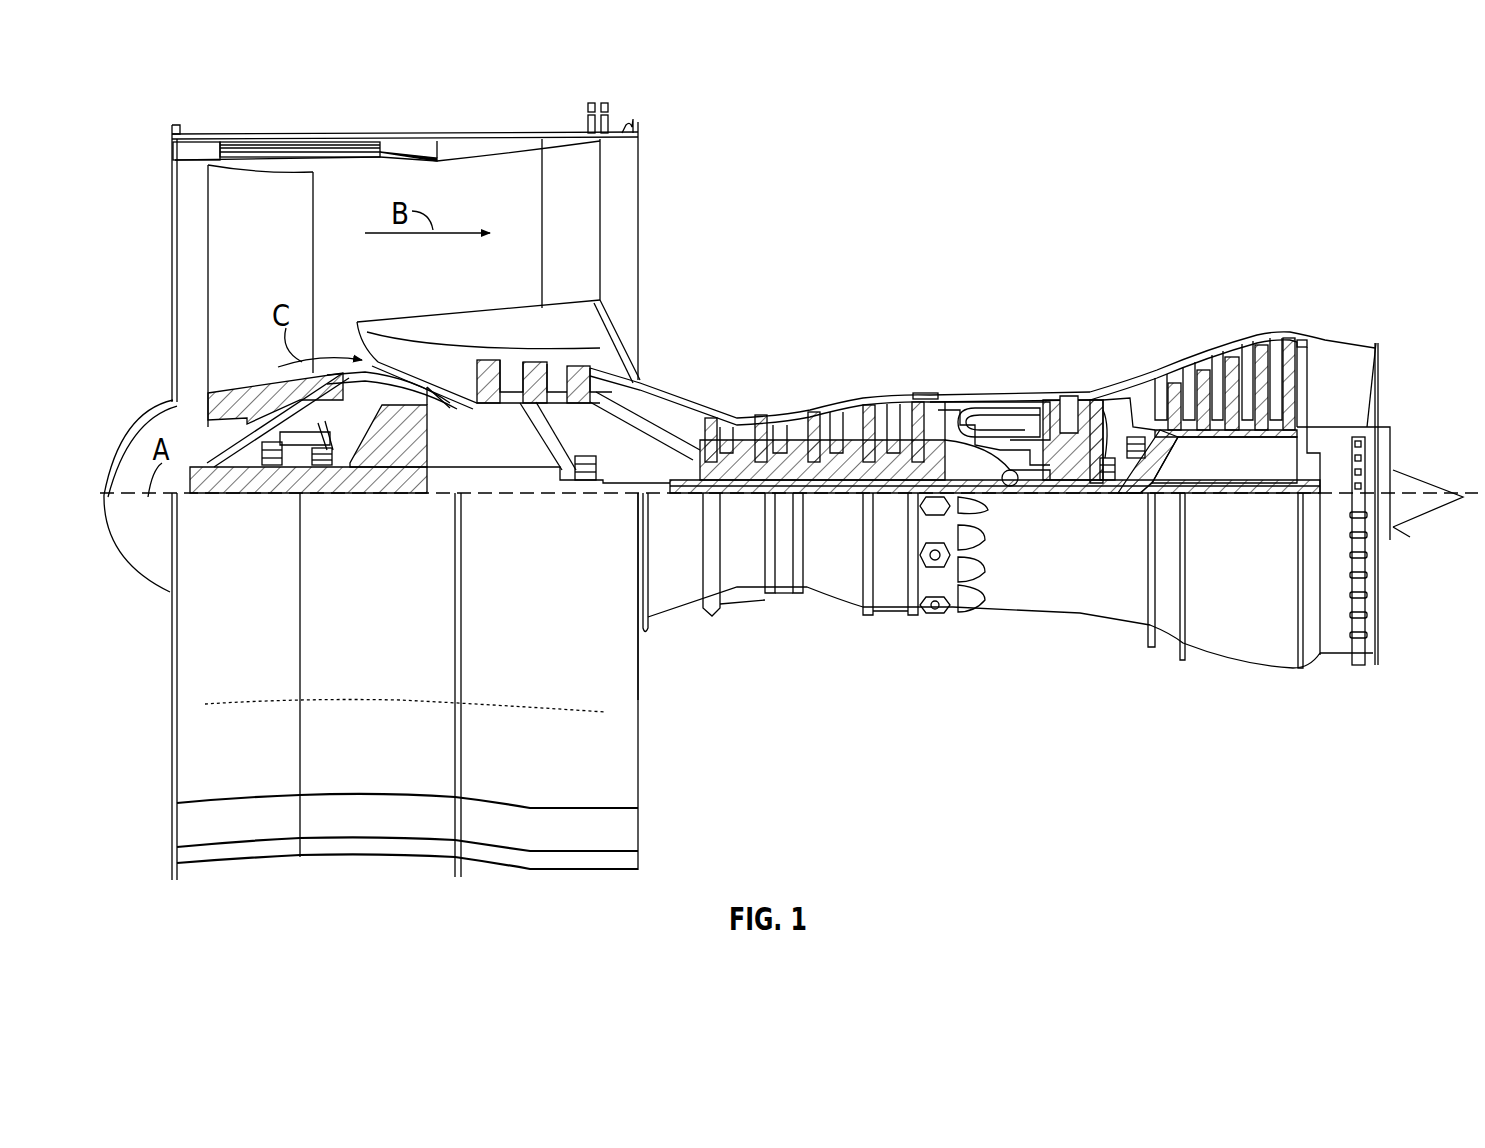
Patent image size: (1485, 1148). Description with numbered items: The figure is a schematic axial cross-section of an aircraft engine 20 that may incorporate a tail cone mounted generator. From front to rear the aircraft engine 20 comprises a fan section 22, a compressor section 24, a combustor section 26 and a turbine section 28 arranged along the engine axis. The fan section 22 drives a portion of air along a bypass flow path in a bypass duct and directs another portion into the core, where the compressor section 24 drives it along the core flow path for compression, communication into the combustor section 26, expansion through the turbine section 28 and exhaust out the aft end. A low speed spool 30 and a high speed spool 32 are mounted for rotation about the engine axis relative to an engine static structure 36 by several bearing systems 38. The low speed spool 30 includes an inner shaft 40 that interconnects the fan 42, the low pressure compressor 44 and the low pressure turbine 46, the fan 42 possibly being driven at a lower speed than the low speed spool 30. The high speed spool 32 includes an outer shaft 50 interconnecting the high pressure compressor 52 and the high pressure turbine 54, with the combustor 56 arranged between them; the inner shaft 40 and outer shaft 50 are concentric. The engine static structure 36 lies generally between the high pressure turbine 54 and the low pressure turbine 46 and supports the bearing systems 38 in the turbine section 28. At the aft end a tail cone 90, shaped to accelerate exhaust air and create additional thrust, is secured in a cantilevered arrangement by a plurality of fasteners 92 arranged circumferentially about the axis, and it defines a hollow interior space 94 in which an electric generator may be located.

The aircraft engine 20 is at (1202, 171).
The fan section 22 is at (441, 124).
The compressor section 24 is at (826, 358).
The combustor section 26 is at (990, 358).
The turbine section 28 is at (1134, 342).
The low speed spool 30 is at (854, 504).
The high speed spool 32 is at (905, 450).
The engine static structure 36 is at (893, 612).
The bearing systems 38 is at (276, 458).
The inner shaft 40 is at (650, 492).
The fan 42 is at (255, 258).
The low pressure compressor 44 is at (550, 373).
The low pressure turbine 46 is at (1232, 358).
The outer shaft 50 is at (1021, 473).
The high pressure compressor 52 is at (815, 466).
The high pressure turbine 54 is at (1073, 397).
The combustor 56 is at (997, 412).
The tail cone 90 is at (1393, 524).
The fasteners 92 is at (1357, 437).
The hollow interior space 94 is at (1405, 488).